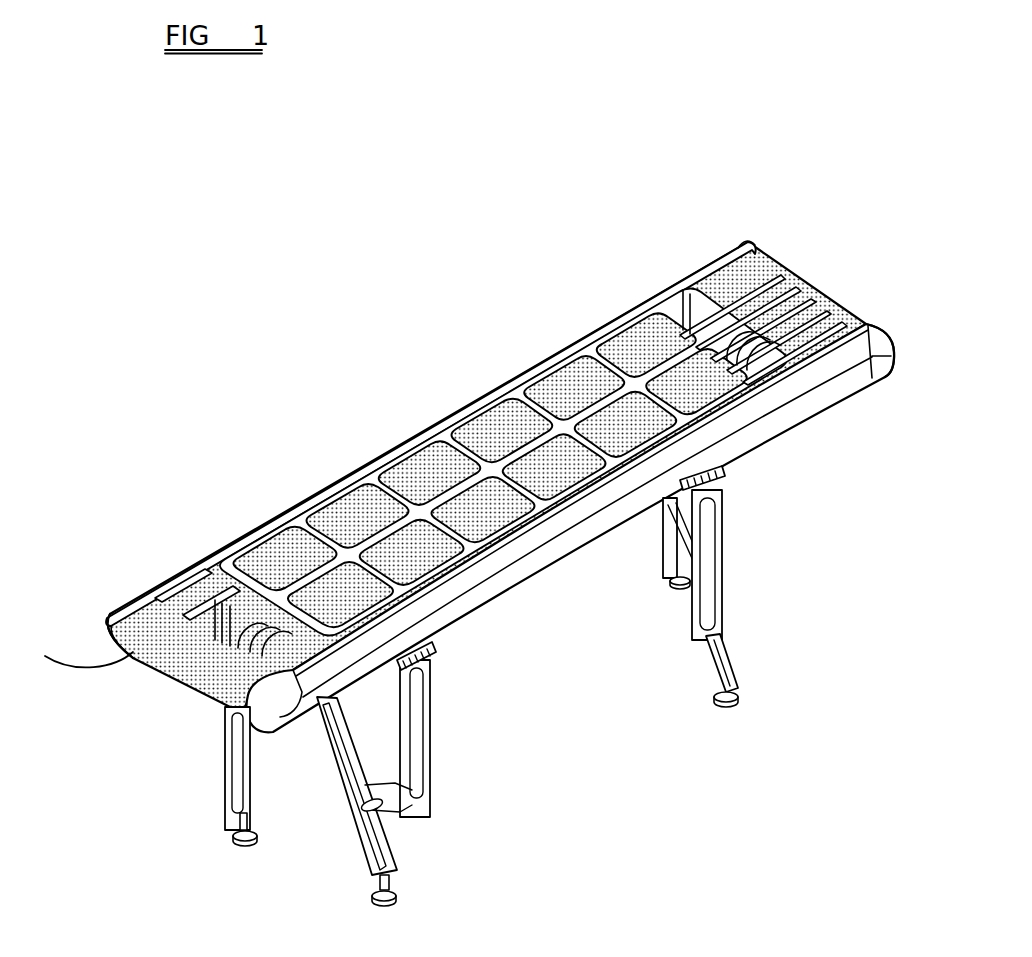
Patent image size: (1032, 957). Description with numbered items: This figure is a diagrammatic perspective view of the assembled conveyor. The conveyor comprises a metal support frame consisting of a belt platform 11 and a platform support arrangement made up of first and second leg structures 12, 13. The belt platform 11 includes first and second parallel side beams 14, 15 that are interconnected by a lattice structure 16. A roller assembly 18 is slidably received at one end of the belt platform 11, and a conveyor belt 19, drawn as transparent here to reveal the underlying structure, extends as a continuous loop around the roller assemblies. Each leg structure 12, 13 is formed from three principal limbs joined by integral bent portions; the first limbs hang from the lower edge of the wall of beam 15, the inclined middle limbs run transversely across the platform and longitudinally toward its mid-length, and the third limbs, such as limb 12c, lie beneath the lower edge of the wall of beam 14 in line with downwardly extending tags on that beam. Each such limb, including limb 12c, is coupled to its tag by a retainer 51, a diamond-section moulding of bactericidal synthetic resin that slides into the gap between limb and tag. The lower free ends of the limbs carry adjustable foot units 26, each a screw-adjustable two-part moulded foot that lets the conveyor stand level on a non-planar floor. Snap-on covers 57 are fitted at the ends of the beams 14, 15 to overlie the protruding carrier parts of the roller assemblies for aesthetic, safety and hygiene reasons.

The belt platform 11 is at (469, 446).
The first leg structure 12 is at (395, 767).
The limb 12c is at (433, 752).
The second leg structure 13 is at (668, 604).
The first side beam 14 is at (538, 567).
The second side beam 15 is at (492, 385).
The lattice structure 16 is at (590, 378).
The roller assembly 18 is at (773, 287).
The conveyor belt 19 is at (336, 528).
The adjustable foot unit 26 is at (245, 828).
The retainer 51 is at (725, 488).
The snap-on cover 57 is at (877, 342).